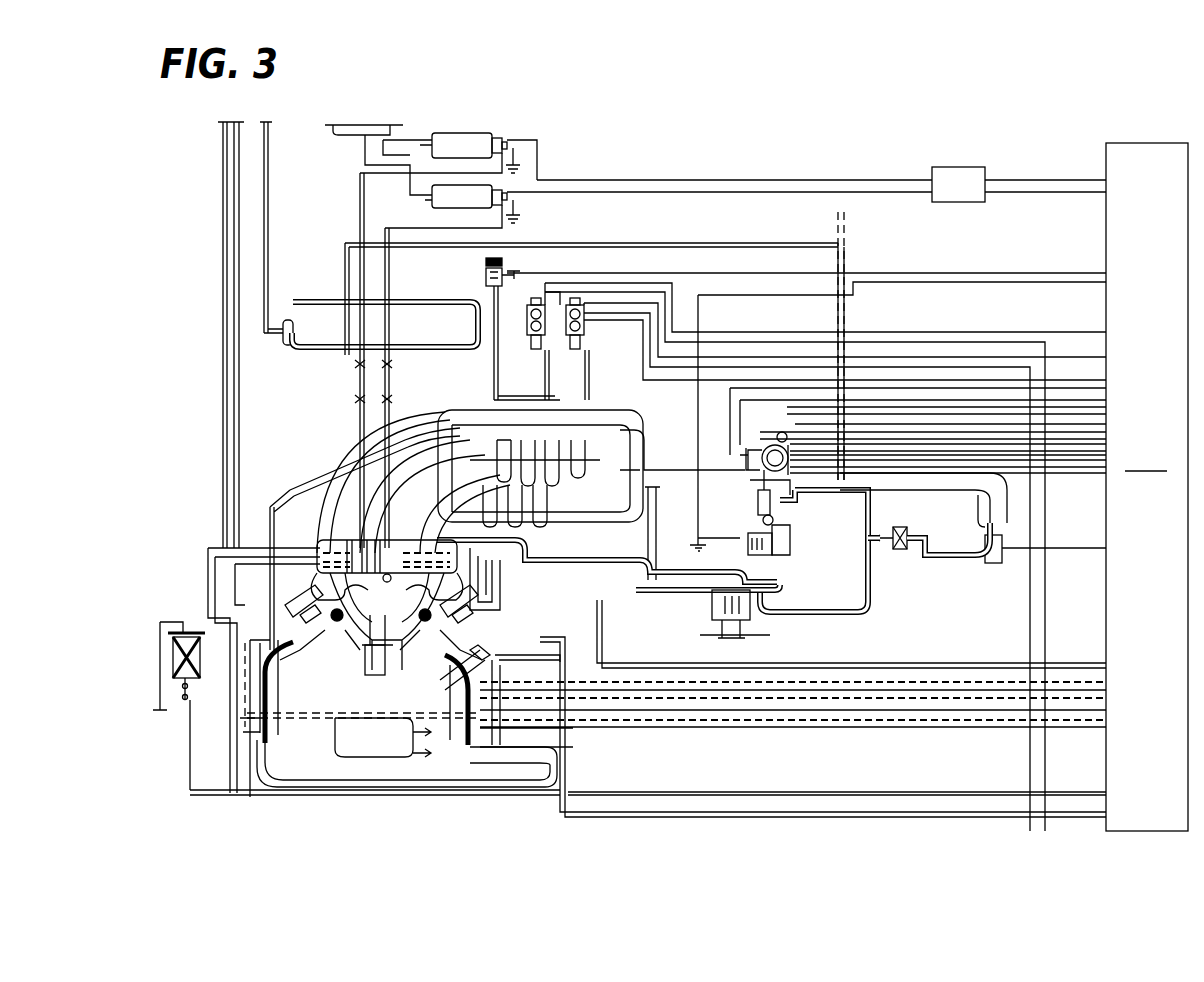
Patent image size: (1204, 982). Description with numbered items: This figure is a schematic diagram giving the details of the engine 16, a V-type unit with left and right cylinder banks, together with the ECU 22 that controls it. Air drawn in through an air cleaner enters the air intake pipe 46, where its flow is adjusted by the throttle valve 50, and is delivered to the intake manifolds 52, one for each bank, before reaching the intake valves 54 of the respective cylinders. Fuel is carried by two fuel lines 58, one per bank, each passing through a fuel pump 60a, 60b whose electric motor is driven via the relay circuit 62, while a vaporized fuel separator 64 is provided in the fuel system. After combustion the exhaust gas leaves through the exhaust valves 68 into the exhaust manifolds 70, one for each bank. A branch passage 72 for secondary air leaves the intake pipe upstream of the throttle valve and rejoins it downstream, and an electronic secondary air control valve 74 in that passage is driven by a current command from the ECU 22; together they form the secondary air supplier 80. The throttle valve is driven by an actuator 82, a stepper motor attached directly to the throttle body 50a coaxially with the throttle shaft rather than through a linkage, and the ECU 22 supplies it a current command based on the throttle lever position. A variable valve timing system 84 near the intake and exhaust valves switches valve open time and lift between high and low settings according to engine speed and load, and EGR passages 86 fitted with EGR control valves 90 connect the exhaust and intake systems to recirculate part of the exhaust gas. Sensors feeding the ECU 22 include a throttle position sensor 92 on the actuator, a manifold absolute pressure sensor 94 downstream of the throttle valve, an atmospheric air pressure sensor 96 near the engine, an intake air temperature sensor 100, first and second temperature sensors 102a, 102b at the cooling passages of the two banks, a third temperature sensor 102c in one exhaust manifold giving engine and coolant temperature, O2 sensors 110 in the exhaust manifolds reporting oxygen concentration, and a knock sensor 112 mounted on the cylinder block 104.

The engine 16 is at (225, 335).
The ECU 22 is at (1147, 462).
The air intake pipe 46 is at (875, 431).
The throttle valve 50 is at (745, 494).
The throttle body 50a is at (682, 451).
The intake manifold 52 is at (540, 453).
The intake valve 54 is at (389, 679).
The fuel line 58 is at (577, 360).
The fuel pump 60a is at (448, 136).
The fuel pump 60b is at (657, 206).
The relay circuit 62 is at (958, 184).
The vaporized fuel separator 64 is at (374, 162).
The exhaust valve 68 is at (416, 677).
The exhaust manifold 70 is at (407, 786).
The branch passage 72 is at (796, 535).
The electronic secondary air control valve 74 is at (785, 557).
The secondary air supplier 80 is at (814, 551).
The actuator 82 is at (745, 435).
The variable valve timing system 84 is at (321, 641).
The EGR passage 86 is at (796, 329).
The EGR control valve 90 is at (806, 557).
The throttle position sensor 92 is at (918, 383).
The manifold absolute pressure sensor 94 is at (706, 440).
The atmospheric air pressure sensor 96 is at (973, 534).
The intake air temperature sensor 100 is at (608, 589).
The first temperature sensor 102a is at (462, 697).
The second temperature sensor 102b is at (243, 718).
The third temperature sensor 102c is at (255, 794).
The cylinder block 104 is at (383, 737).
The O2 sensor 110 is at (350, 699).
The knock sensor 112 is at (361, 646).